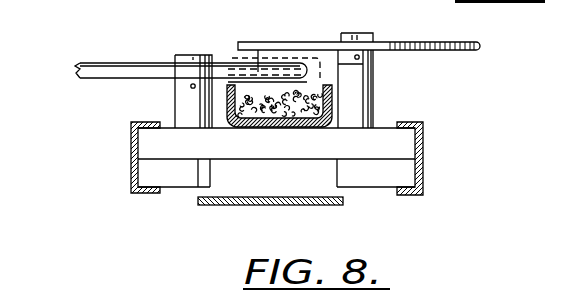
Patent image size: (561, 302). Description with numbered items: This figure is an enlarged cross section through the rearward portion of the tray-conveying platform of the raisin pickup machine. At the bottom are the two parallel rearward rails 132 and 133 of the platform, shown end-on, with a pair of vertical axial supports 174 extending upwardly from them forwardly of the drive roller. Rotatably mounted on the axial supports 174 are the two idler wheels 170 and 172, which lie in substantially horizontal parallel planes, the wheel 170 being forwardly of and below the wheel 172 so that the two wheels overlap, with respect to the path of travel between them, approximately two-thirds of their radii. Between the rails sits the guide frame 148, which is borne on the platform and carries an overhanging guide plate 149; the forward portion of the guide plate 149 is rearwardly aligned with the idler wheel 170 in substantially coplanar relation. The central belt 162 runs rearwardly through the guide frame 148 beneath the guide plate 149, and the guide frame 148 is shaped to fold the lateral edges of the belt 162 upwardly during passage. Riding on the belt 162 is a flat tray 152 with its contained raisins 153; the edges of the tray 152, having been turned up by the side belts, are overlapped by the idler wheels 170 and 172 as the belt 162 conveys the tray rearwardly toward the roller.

The idler wheel 170 is at (103, 68).
The idler wheel 172 is at (453, 50).
The axial supports 174 is at (193, 112).
The rearward rail 133 is at (130, 162).
The rearward rail 132 is at (423, 150).
The belt 162 is at (245, 198).
The guide frame 148 is at (310, 125).
The raisins 153 is at (268, 165).
The tray 152 is at (295, 55).
The guide plate 149 is at (258, 50).